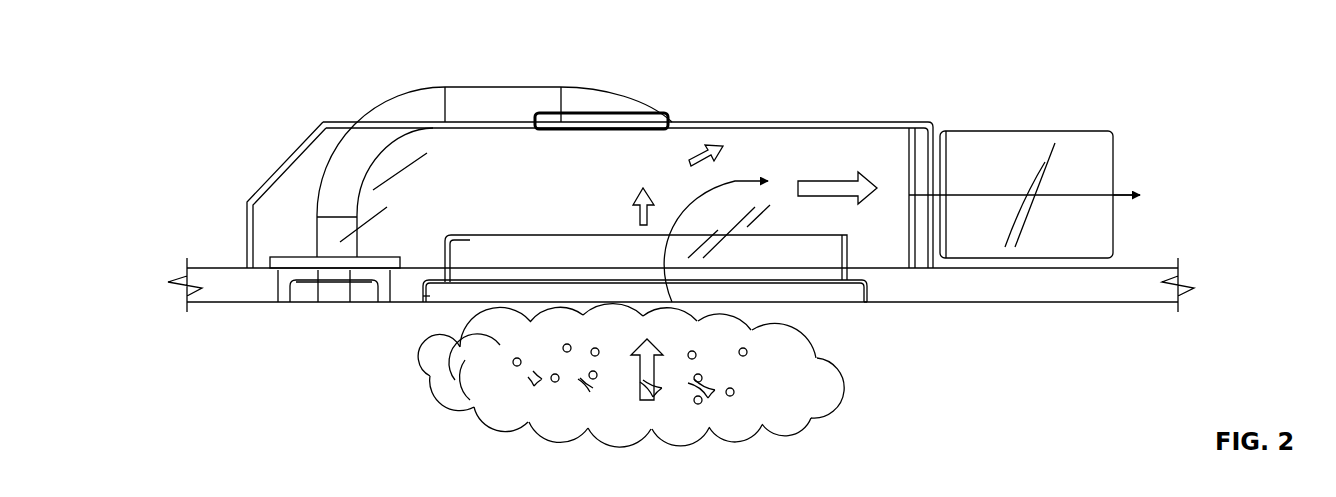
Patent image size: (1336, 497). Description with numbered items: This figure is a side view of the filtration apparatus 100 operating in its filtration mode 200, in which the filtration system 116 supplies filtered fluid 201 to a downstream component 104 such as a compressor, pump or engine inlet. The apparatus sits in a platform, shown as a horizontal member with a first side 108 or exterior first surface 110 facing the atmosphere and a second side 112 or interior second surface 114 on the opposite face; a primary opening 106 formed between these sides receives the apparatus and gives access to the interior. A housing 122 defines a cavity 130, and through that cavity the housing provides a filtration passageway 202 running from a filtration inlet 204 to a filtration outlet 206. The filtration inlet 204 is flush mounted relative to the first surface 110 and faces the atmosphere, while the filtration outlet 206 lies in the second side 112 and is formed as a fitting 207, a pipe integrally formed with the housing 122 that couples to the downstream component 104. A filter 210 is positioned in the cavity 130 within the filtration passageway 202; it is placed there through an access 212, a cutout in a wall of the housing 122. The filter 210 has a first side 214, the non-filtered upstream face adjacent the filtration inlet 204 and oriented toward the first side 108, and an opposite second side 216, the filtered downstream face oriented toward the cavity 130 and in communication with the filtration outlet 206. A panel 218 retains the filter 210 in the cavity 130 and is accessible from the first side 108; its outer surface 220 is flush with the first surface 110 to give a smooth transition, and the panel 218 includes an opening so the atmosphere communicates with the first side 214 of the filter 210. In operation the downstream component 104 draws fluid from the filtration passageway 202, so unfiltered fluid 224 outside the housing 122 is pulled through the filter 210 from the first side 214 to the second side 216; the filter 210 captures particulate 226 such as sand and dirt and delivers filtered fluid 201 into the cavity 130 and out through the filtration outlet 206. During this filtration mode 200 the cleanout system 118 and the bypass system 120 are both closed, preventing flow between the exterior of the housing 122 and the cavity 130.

The filtration apparatus 100 is at (183, 84).
The downstream component 104 is at (1205, 80).
The primary opening 106 is at (868, 293).
The first side 108 is at (217, 385).
The first surface 110 is at (222, 305).
The second side 112 is at (197, 180).
The second surface 114 is at (213, 266).
The filtration system 116 is at (855, 152).
The cleanout system 118 is at (596, 87).
The bypass system 120 is at (297, 243).
The housing 122 is at (310, 139).
The cavity 130 is at (573, 176).
The filtration mode 200 is at (415, 72).
The filtered fluid 201 is at (835, 178).
The filtration passageway 202 is at (748, 180).
The filtration inlet 204 is at (870, 325).
The filtration outlet 206 is at (1128, 135).
The fitting 207 is at (1050, 132).
The filter 210 is at (565, 246).
The access 212 is at (845, 255).
The first side 214 is at (438, 307).
The second side 216 is at (470, 234).
The panel 218 is at (838, 295).
The outer surface 220 is at (427, 350).
The unfiltered fluid 224 is at (612, 380).
The particulate 226 is at (555, 378).